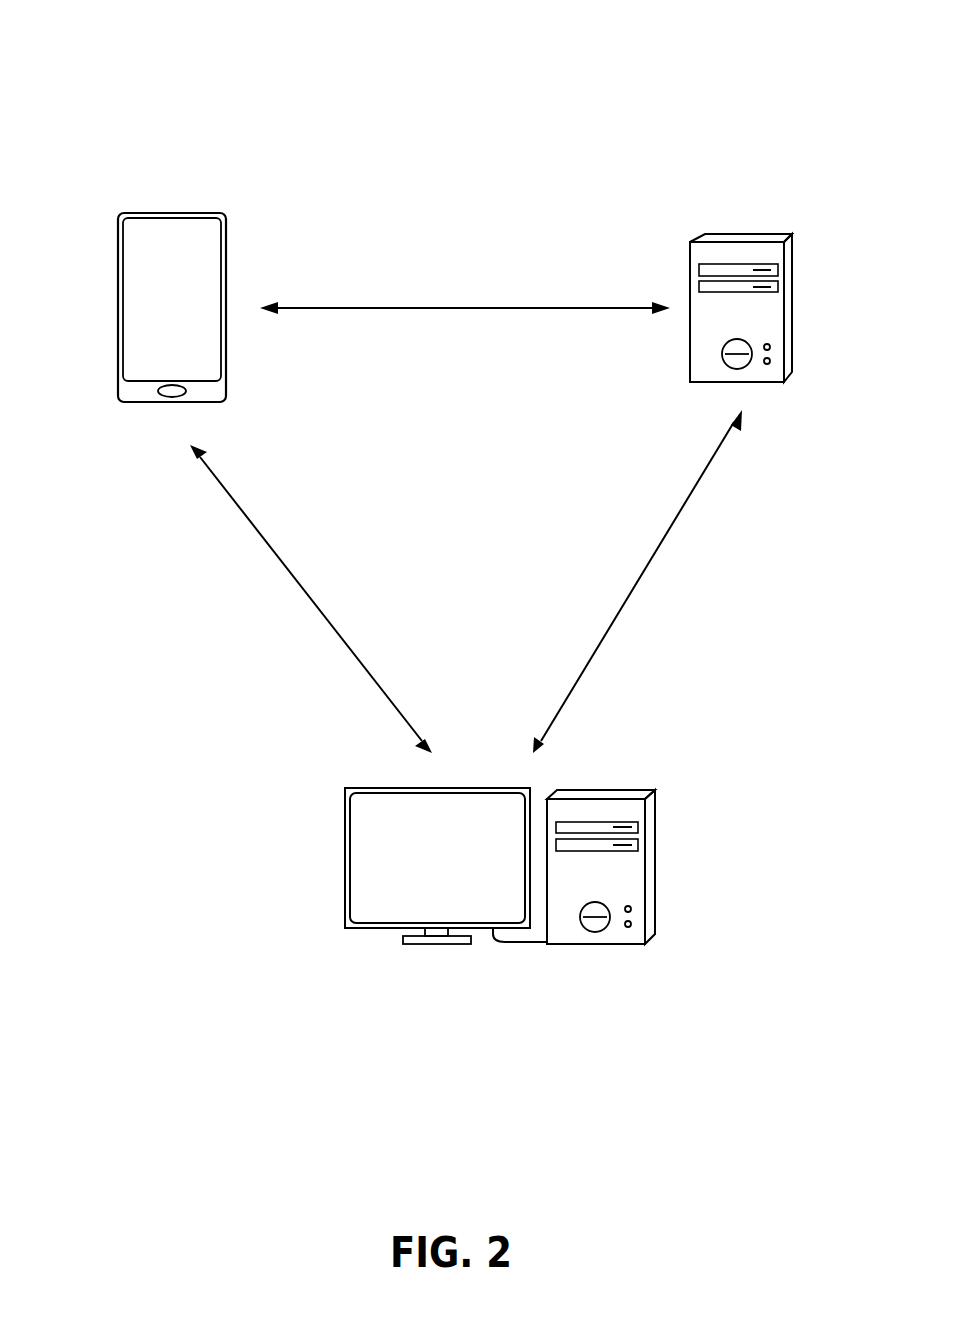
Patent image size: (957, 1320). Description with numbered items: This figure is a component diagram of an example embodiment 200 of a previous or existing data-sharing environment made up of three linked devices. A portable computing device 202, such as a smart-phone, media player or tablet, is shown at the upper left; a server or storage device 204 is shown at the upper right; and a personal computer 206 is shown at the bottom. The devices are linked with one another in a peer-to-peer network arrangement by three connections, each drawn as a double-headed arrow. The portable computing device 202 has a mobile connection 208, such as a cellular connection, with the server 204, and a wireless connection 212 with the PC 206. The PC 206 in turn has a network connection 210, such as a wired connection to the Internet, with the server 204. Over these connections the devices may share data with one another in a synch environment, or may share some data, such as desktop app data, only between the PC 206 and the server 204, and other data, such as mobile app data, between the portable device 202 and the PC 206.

The data-sharing environment 200 is at (166, 46).
The portable computing device 202 is at (170, 213).
The server or storage device 204 is at (740, 233).
The personal computer 206 is at (345, 862).
The mobile connection 208 is at (467, 307).
The network connection 210 is at (640, 580).
The wireless connection 212 is at (293, 582).